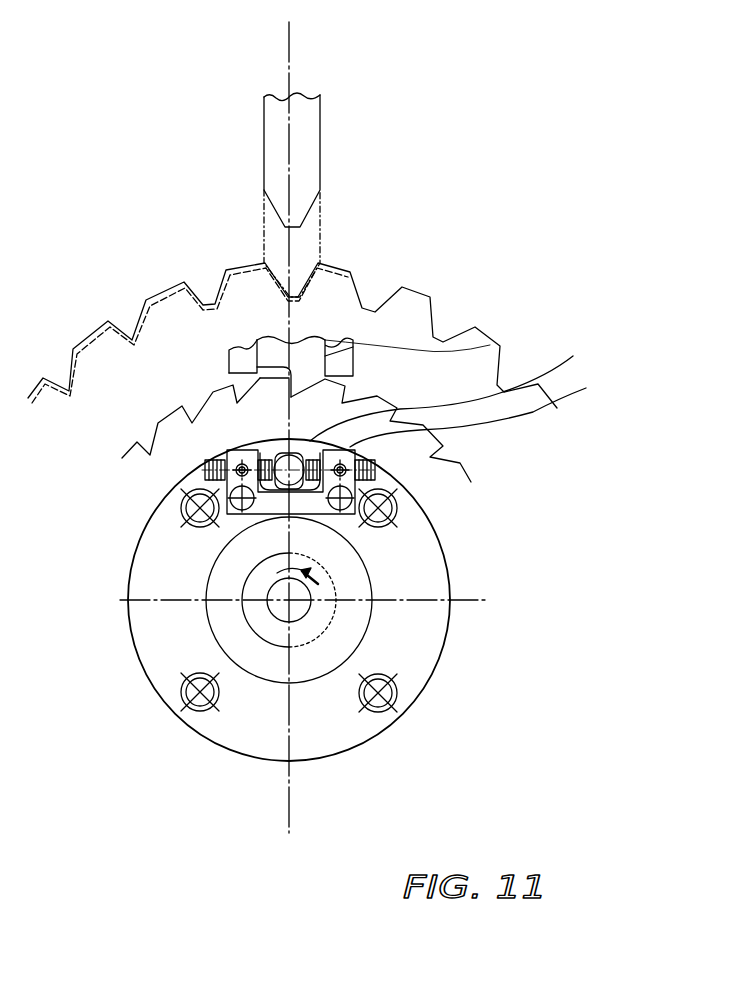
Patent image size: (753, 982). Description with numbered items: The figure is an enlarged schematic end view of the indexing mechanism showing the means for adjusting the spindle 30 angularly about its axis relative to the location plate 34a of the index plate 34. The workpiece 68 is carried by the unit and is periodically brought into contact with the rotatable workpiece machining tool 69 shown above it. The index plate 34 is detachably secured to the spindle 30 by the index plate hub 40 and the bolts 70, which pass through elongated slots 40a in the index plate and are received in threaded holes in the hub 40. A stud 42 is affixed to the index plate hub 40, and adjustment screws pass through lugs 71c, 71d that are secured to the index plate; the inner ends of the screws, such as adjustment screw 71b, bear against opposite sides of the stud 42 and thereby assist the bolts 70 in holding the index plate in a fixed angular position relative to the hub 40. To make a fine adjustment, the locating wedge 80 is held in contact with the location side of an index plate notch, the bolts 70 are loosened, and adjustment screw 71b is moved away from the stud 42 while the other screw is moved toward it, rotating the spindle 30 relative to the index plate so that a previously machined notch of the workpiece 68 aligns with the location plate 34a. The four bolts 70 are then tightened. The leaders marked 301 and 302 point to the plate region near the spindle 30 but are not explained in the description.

The hub / spindle 30 is at (333, 613).
The support plate 34 is at (467, 474).
The axis 34a is at (291, 46).
The disc 40 is at (373, 583).
The disc holes 40a is at (184, 676).
The ratchet gear 42 is at (362, 408).
The saw blade 68 is at (353, 273).
The grinding tool 69 is at (320, 148).
The screws 70 is at (190, 520).
The springs 71b is at (206, 471).
The guide arc 71c is at (490, 409).
The clamp body 71d is at (182, 493).
The pawl 80 is at (490, 345).
The stop surface 301 is at (238, 517).
The stop surface 302 is at (215, 555).